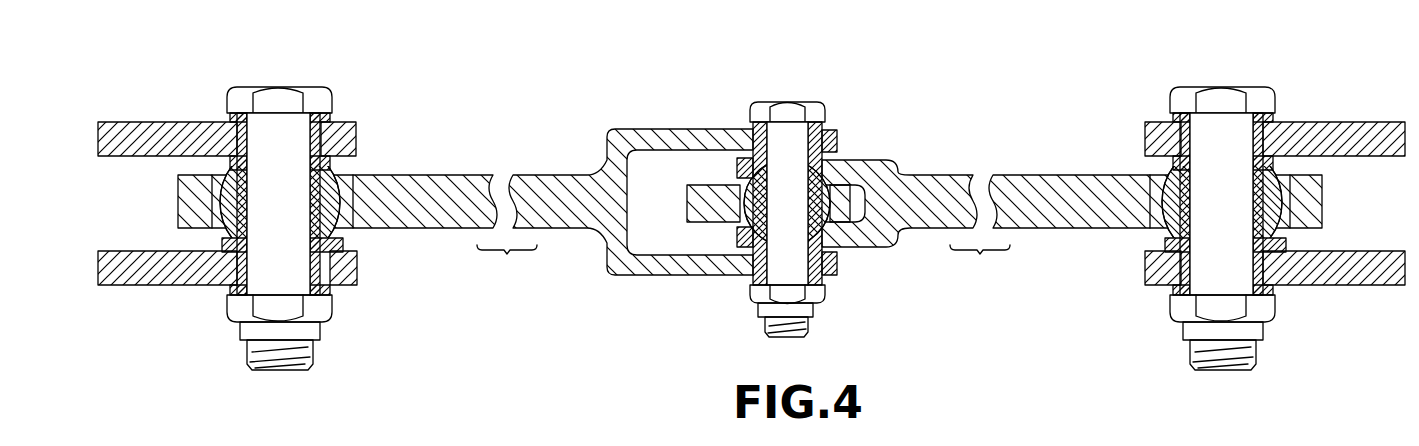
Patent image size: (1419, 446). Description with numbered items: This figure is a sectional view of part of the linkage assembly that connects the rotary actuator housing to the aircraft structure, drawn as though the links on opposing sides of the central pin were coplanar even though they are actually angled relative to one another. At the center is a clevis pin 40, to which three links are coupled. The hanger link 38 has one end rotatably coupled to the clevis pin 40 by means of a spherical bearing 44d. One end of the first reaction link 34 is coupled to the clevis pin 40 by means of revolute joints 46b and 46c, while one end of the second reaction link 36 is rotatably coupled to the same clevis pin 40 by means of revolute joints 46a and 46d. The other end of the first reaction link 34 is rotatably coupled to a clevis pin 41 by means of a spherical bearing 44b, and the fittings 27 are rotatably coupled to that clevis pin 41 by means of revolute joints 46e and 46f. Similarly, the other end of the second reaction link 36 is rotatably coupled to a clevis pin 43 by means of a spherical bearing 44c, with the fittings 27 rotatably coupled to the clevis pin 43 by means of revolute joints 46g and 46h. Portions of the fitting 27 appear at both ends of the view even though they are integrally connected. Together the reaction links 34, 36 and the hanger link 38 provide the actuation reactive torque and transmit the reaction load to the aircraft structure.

The fitting 27 is at (168, 126).
The first reaction link 34 is at (1075, 183).
The second reaction link 36 is at (545, 182).
The hanger link 38 is at (693, 218).
The clevis pin 40 is at (793, 108).
The clevis pin 41 is at (1233, 88).
The clevis pin 43 is at (307, 88).
The spherical bearing 44b is at (1160, 207).
The spherical bearing 44c is at (327, 217).
The spherical bearing 44d is at (867, 243).
The revolute joint 46a is at (827, 132).
The revolute joint 46b is at (870, 163).
The revolute joint 46c is at (738, 233).
The revolute joint 46d is at (750, 273).
The revolute joint 46e is at (1187, 135).
The revolute joint 46f is at (1267, 263).
The revolute joint 46g is at (318, 147).
The revolute joint 46h is at (235, 260).